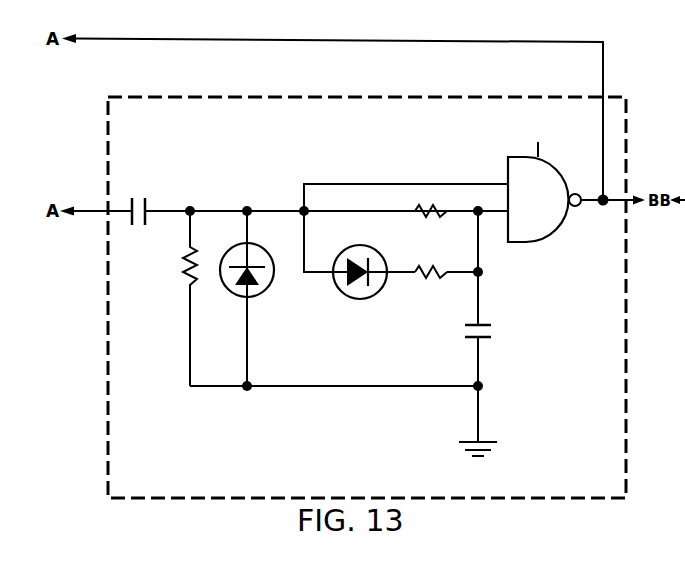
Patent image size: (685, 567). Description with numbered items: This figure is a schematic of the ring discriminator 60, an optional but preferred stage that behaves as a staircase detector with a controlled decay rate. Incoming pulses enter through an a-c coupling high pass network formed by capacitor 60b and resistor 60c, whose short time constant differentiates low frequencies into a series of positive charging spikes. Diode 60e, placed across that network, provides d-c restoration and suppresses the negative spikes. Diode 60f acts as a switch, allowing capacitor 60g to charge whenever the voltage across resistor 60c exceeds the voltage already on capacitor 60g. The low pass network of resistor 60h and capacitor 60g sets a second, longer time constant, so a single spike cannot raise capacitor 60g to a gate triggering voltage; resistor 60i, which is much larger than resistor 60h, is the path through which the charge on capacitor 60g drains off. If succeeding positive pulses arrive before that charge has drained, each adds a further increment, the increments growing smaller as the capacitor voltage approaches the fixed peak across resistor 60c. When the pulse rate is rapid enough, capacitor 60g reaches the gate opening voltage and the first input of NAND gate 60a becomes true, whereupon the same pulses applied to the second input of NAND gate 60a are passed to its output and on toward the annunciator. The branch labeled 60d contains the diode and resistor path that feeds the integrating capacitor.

The ring discriminator 60 is at (211, 143).
The NAND gate 60a is at (538, 236).
The capacitor 60b is at (141, 204).
The resistor 60c is at (188, 250).
The delay branch 60d is at (404, 325).
The diode 60e is at (262, 293).
The diode 60f is at (344, 297).
The capacitor 60g is at (488, 322).
The resistor 60h is at (427, 280).
The resistor 60i is at (424, 214).